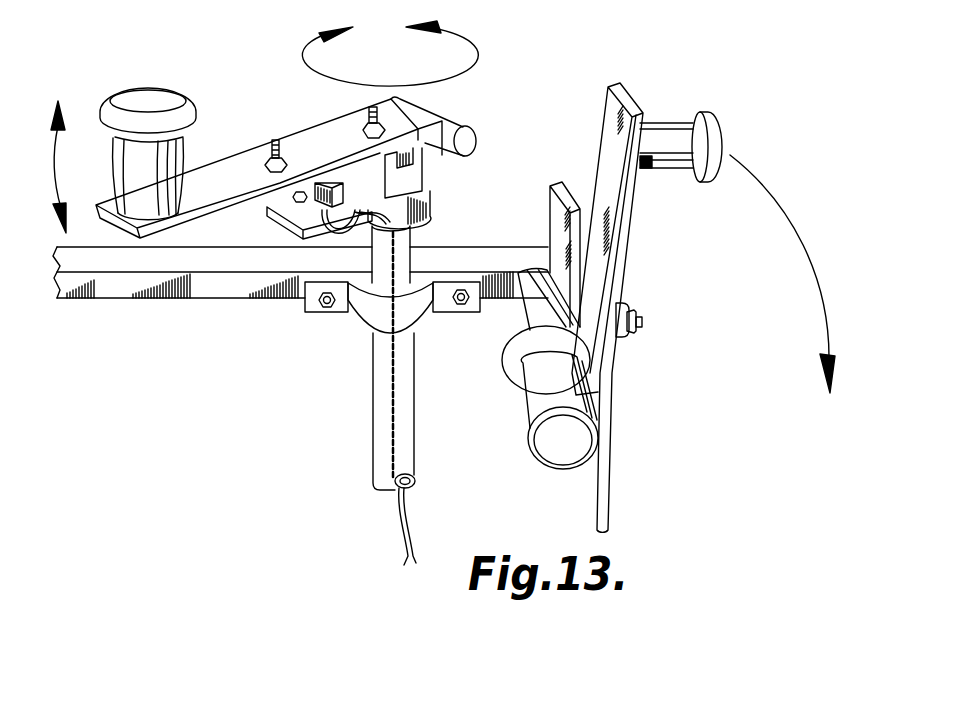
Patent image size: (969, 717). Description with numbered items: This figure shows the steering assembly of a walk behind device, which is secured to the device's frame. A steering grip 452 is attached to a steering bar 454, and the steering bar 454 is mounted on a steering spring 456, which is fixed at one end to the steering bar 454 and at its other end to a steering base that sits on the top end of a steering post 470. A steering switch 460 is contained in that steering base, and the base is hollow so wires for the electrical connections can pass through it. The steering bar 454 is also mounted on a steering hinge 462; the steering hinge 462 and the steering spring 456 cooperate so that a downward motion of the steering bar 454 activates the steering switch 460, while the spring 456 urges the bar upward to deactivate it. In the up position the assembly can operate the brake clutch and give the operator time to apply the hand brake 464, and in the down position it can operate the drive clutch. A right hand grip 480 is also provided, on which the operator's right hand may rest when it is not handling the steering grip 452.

The steering grip 452 is at (185, 174).
The steering bar 454 is at (233, 192).
The steering spring 456 is at (423, 180).
The steering switch 460 is at (297, 203).
The steering hinge 462 is at (408, 113).
The hand brake 464 is at (675, 147).
The steering post 470 is at (383, 360).
The right hand grip 480 is at (540, 387).